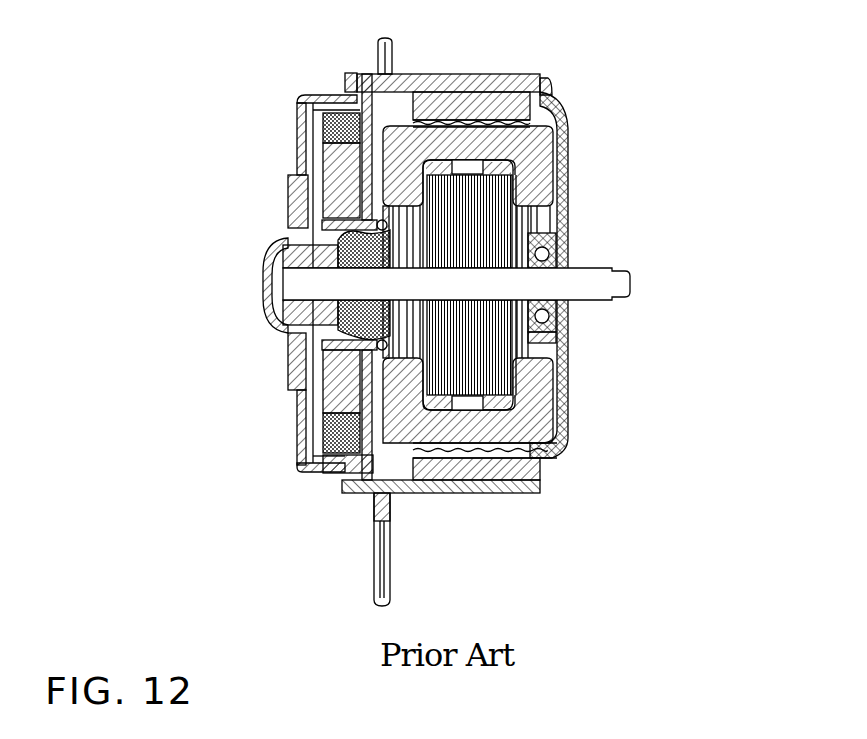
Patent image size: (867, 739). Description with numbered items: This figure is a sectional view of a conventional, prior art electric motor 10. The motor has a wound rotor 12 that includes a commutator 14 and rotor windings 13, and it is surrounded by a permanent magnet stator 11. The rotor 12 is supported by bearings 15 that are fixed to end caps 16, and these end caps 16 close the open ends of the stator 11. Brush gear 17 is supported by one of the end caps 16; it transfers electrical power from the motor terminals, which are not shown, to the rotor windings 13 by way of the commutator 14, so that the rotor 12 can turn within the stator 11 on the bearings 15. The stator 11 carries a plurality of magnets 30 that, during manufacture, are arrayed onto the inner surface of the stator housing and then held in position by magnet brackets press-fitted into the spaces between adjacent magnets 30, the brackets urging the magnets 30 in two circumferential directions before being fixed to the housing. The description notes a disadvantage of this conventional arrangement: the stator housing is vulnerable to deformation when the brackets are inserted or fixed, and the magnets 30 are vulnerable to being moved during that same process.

The motor 10 is at (606, 88).
The permanent magnet stator 11 is at (460, 496).
The wound rotor 12 is at (488, 343).
The rotor windings 13 is at (557, 428).
The commutator 14 is at (300, 378).
The bearings 15 is at (567, 247).
The end caps 16 is at (567, 157).
The brush gear 17 is at (330, 170).
The magnets 30 is at (498, 493).